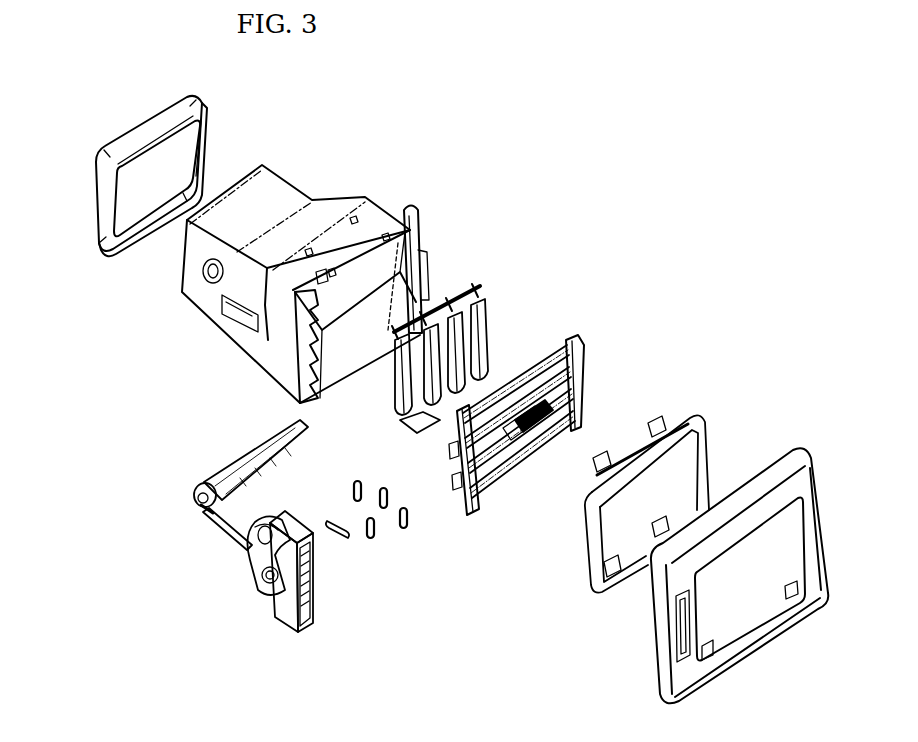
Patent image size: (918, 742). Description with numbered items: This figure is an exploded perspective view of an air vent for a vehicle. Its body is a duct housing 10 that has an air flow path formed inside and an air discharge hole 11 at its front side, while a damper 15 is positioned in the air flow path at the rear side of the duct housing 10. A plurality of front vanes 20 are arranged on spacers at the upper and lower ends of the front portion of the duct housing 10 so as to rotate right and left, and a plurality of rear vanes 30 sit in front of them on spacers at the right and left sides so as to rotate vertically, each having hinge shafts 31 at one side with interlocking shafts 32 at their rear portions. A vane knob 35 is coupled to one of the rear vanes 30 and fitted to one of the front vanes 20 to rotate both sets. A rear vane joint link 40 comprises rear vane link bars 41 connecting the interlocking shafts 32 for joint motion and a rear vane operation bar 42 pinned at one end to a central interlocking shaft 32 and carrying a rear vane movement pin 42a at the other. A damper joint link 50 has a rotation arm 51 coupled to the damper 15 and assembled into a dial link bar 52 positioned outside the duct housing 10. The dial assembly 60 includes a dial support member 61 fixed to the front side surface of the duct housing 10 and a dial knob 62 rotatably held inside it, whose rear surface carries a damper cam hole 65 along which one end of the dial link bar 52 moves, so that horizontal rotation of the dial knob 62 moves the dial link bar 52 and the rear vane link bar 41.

The duct housing 10 is at (372, 220).
The air discharge hole 11 is at (423, 243).
The damper 15 is at (255, 456).
The front vanes 20 is at (480, 305).
The rear vanes 30 is at (507, 383).
The hinge shafts 31 is at (450, 500).
The interlocking shafts 32 is at (460, 477).
The vane knob 35 is at (587, 437).
The rear vane joint link 40 is at (358, 557).
The rear vane link bars 41 is at (403, 535).
The rear vane operation bar 42 is at (340, 537).
The rear vane movement pin 42a is at (330, 522).
The damper joint link 50 is at (166, 578).
The rotation arm 51 is at (205, 505).
The dial link bar 52 is at (222, 545).
The dial assembly 60 is at (297, 600).
The dial support member 61 is at (287, 630).
The dial knob 62 is at (313, 600).
The damper cam hole 65 is at (255, 525).